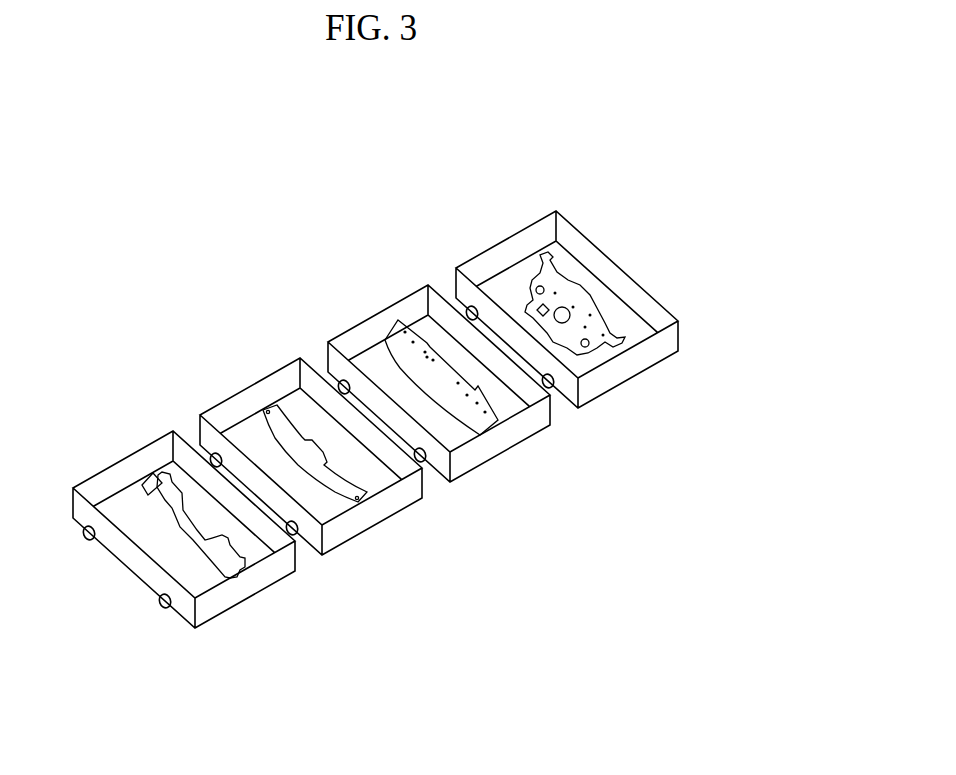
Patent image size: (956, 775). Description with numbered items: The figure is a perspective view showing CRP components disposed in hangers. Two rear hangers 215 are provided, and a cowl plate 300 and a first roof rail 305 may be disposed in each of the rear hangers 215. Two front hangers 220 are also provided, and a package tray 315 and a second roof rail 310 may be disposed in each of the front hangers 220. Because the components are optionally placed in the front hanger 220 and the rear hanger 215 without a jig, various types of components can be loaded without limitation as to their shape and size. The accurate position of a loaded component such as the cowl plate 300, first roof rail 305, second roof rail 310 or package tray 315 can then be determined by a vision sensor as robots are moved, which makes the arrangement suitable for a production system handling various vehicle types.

The rear hanger 215 is at (293, 349).
The front hanger 220 is at (546, 201).
The cowl plate 300 is at (230, 567).
The first roof rail 305 is at (360, 500).
The second roof rail 310 is at (485, 420).
The package tray 315 is at (592, 340).